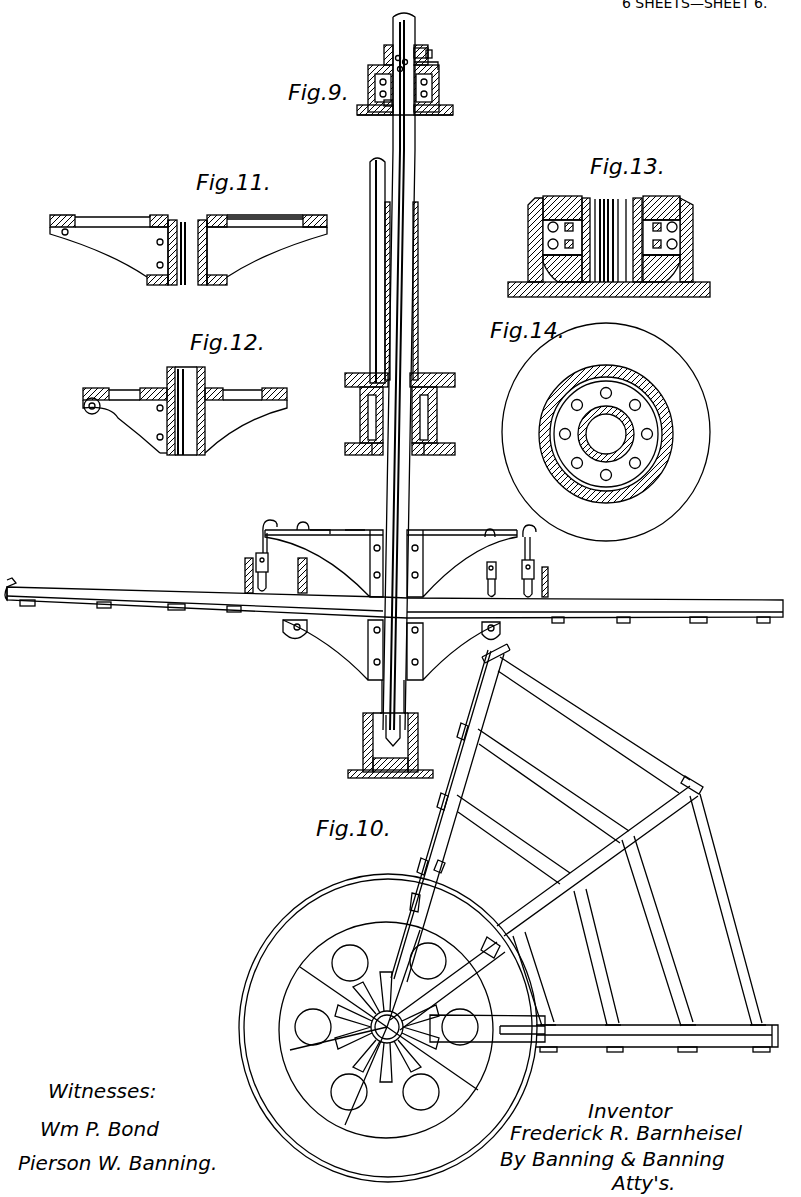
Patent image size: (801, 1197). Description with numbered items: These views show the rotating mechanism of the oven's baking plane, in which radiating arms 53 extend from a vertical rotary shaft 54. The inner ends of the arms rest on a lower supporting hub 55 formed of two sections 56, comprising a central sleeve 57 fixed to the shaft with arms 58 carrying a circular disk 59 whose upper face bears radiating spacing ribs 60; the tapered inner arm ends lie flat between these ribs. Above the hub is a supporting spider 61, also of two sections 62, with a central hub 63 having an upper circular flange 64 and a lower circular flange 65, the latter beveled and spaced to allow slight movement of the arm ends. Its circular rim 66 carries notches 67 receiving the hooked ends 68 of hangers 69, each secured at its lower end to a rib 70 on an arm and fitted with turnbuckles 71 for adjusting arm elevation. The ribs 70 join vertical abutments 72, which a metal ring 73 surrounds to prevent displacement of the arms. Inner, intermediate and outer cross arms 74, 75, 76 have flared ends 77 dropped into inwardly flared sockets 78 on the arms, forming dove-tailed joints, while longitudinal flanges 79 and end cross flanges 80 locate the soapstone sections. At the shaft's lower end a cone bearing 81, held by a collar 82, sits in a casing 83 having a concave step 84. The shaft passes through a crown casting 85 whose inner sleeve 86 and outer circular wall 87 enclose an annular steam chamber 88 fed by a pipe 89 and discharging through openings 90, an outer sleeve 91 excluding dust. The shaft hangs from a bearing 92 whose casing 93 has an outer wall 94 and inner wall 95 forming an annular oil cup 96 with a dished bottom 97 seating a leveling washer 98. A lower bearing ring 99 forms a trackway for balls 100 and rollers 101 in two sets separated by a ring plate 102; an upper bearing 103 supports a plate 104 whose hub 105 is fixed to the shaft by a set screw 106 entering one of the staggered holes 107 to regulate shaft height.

In FIG. 10, the arms 53 is at (216, 608).
In FIG. 10, the rotary shaft 54 is at (405, 176).
In FIG. 10, the lower supporting hub 55 is at (362, 922).
In FIG. 10, the sections 56 is at (368, 950).
In FIG. 12, the central sleeve 57 is at (160, 452).
In FIG. 12, the arms 58 is at (133, 420).
In FIG. 12, the circular disk 59 is at (158, 390).
In FIG. 10, the circular disk 59 is at (604, 1040).
In FIG. 10, the spacing ribs 60 is at (436, 1008).
In FIG. 10, the supporting spider 61 is at (324, 563).
In FIG. 10, the sections 62 is at (462, 563).
In FIG. 11, the central hub 63 is at (208, 250).
In FIG. 11, the upper circular flange 64 is at (162, 215).
In FIG. 11, the lower circular flange 65 is at (160, 285).
In FIG. 11, the circular rim 66 is at (195, 213).
In FIG. 10, the circular rim 66 is at (358, 530).
In FIG. 11, the notches 67 is at (250, 215).
In FIG. 10, the notches 67 is at (340, 530).
In FIG. 10, the hooked ends 68 is at (265, 530).
In FIG. 10, the hangers 69 is at (263, 543).
In FIG. 10, the rib 70 is at (264, 596).
In FIG. 10, the turnbuckles 71 is at (268, 565).
In FIG. 10, the vertical abutments 72 is at (256, 582).
In FIG. 10, the metal ring 73 is at (245, 565).
In FIG. 10, the inner cross arms 74 is at (490, 864).
In FIG. 10, the intermediate cross arms 75 is at (552, 800).
In FIG. 10, the outer cross arms 76 is at (630, 758).
In FIG. 10, the ends 77 is at (446, 862).
In FIG. 10, the sockets 78 is at (28, 606).
In FIG. 10, the longitudinally extending flanges 79 is at (488, 776).
In FIG. 10, the end cross flanges 80 is at (518, 650).
In FIG. 10, the cone bearing 81 is at (402, 728).
In FIG. 10, the collar 82 is at (380, 704).
In FIG. 10, the casing 83 is at (364, 750).
In FIG. 10, the concave step 84 is at (385, 778).
In FIG. 10, the crown casting 85 is at (437, 396).
In FIG. 14, the inner sleeve 86 is at (606, 434).
In FIG. 10, the inner sleeve 86 is at (428, 440).
In FIG. 14, the outer circular wall 87 is at (668, 443).
In FIG. 10, the outer circular wall 87 is at (437, 416).
In FIG. 10, the annular steam chamber 88 is at (368, 415).
In FIG. 10, the pipe 89 is at (372, 252).
In FIG. 14, the openings 90 is at (641, 405).
In FIG. 10, the openings 90 is at (373, 452).
In FIG. 10, the outer sleeve 91 is at (418, 295).
In FIG. 9, the bearing 92 is at (440, 88).
In FIG. 13, the bearing 92 is at (700, 240).
In FIG. 9, the casing 93 is at (368, 90).
In FIG. 13, the casing 93 is at (535, 268).
In FIG. 9, the outer wall 94 is at (376, 80).
In FIG. 13, the outer wall 94 is at (548, 242).
In FIG. 9, the inner wall 95 is at (385, 114).
In FIG. 13, the inner wall 95 is at (583, 200).
In FIG. 13, the annular oil cup 96 is at (541, 218).
In FIG. 9, the bottom 97 is at (426, 115).
In FIG. 13, the bottom 97 is at (680, 283).
In FIG. 9, the leveling washer 98 is at (375, 114).
In FIG. 13, the leveling washer 98 is at (558, 283).
In FIG. 9, the lower bearing ring 99 is at (360, 114).
In FIG. 13, the lower bearing ring 99 is at (545, 250).
In FIG. 13, the balls 100 is at (548, 222).
In FIG. 13, the rollers 101 is at (598, 216).
In FIG. 13, the ring plate 102 is at (560, 227).
In FIG. 9, the upper bearing 103 is at (434, 92).
In FIG. 13, the upper bearing 103 is at (556, 196).
In FIG. 9, the plate 104 is at (388, 56).
In FIG. 9, the hub 105 is at (420, 50).
In FIG. 9, the set screw 106 is at (432, 55).
In FIG. 9, the holes 107 is at (392, 36).